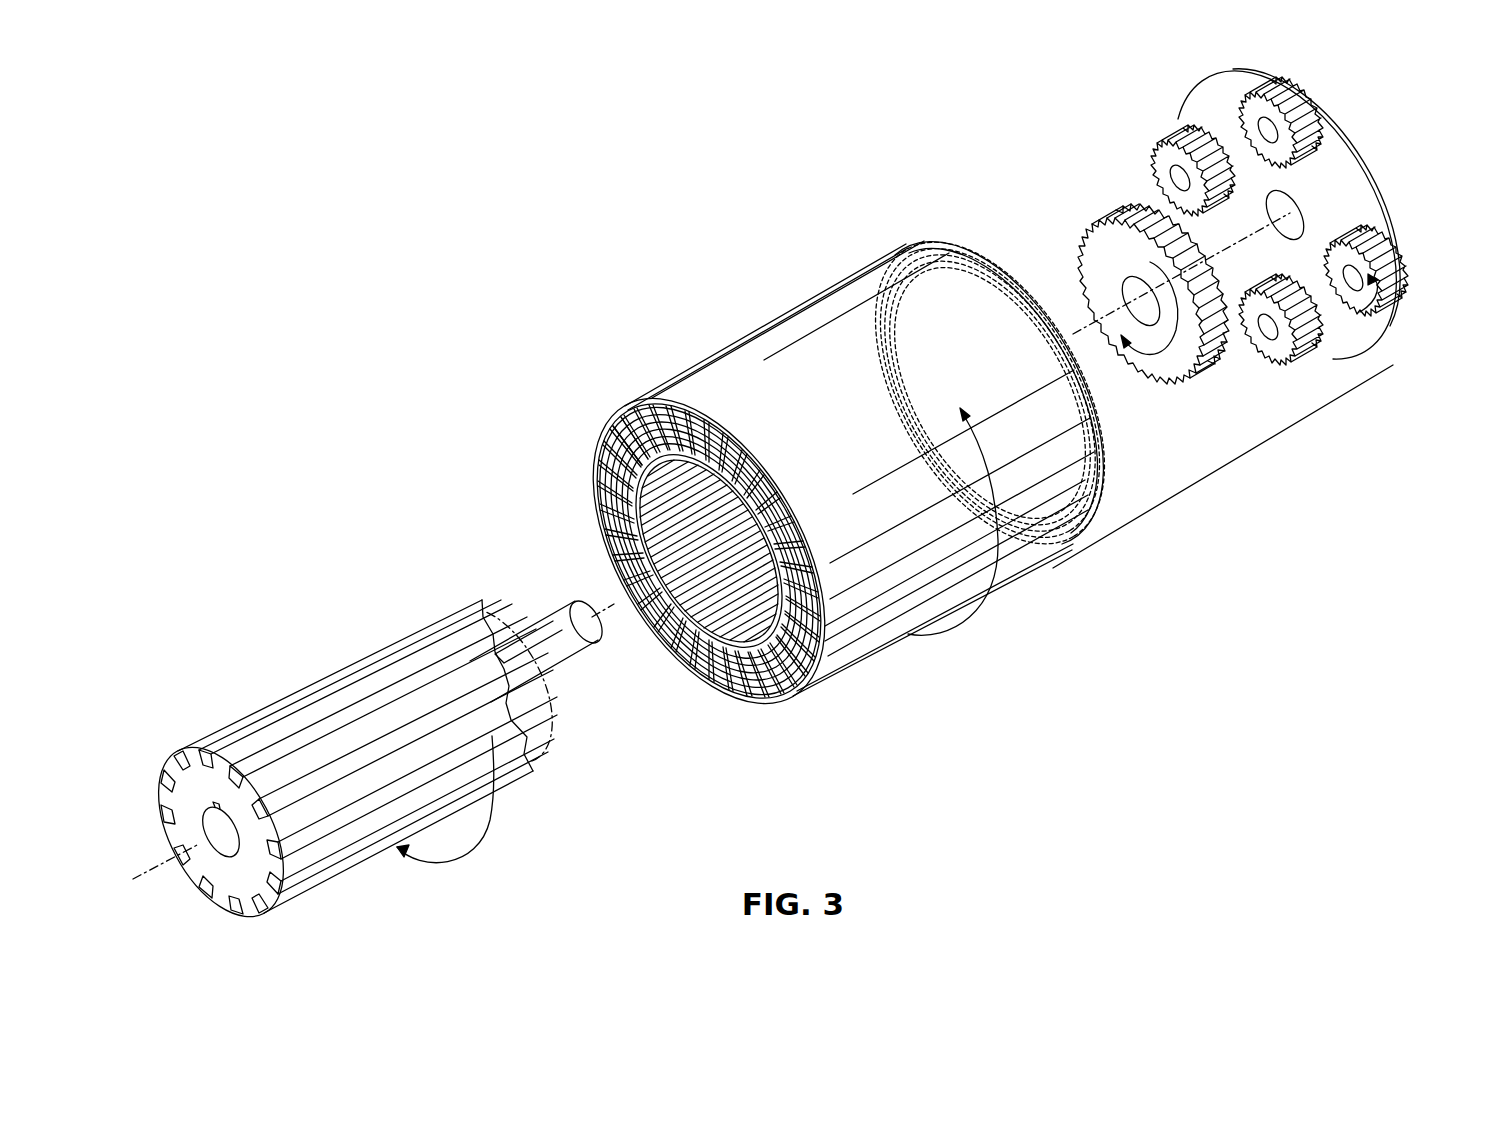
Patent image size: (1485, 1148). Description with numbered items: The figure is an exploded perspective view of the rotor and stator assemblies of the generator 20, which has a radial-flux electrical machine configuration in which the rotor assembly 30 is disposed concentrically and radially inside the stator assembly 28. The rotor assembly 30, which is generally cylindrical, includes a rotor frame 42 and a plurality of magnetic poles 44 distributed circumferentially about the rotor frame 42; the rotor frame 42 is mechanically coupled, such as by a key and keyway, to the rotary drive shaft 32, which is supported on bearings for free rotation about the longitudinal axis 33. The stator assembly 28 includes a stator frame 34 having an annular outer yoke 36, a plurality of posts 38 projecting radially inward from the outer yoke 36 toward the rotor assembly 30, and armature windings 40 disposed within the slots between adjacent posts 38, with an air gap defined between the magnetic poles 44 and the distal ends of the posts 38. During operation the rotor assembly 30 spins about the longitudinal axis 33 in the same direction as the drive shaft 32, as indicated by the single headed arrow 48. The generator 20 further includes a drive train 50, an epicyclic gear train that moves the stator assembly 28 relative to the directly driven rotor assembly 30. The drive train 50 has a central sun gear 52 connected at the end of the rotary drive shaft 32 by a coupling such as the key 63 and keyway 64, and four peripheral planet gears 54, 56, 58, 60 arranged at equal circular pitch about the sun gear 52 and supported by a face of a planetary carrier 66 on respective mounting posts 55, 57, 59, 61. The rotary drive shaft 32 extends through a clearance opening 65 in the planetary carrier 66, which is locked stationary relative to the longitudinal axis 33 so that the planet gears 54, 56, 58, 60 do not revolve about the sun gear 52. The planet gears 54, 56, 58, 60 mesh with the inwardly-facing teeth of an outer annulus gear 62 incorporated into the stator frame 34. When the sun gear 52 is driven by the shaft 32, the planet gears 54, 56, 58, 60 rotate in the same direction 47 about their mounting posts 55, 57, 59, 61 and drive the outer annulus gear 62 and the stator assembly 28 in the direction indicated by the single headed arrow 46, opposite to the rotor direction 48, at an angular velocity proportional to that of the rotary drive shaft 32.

The generator 20 is at (405, 320).
The stator assembly 28 is at (712, 325).
The rotor assembly 30 is at (307, 650).
The rotary drive shaft 32 is at (549, 617).
The longitudinal axis 33 is at (612, 608).
The stator frame 34 is at (678, 374).
The annular outer yoke 36 is at (604, 460).
The posts 38 is at (640, 452).
The armature windings 40 is at (590, 482).
The rotor frame 42 is at (210, 797).
The magnetic poles 44 is at (384, 708).
The single headed arrow 46 is at (978, 622).
The direction 47 is at (1376, 318).
The single headed arrow 48 is at (494, 816).
The drive train 50 is at (1237, 467).
The sun gear 52 is at (1096, 228).
The planet gear 54 is at (1305, 92).
The mounting post 55 is at (1269, 136).
The planet gear 56 is at (1401, 272).
The mounting post 57 is at (1339, 276).
The planet gear 58 is at (1306, 356).
The mounting post 59 is at (1268, 341).
The planet gear 60 is at (1178, 138).
The mounting post 61 is at (1170, 180).
The outer annulus gear 62 is at (1000, 296).
The key 63 is at (484, 608).
The keyway 64 is at (1137, 279).
The clearance opening 65 is at (1268, 214).
The planetary carrier 66 is at (1313, 203).